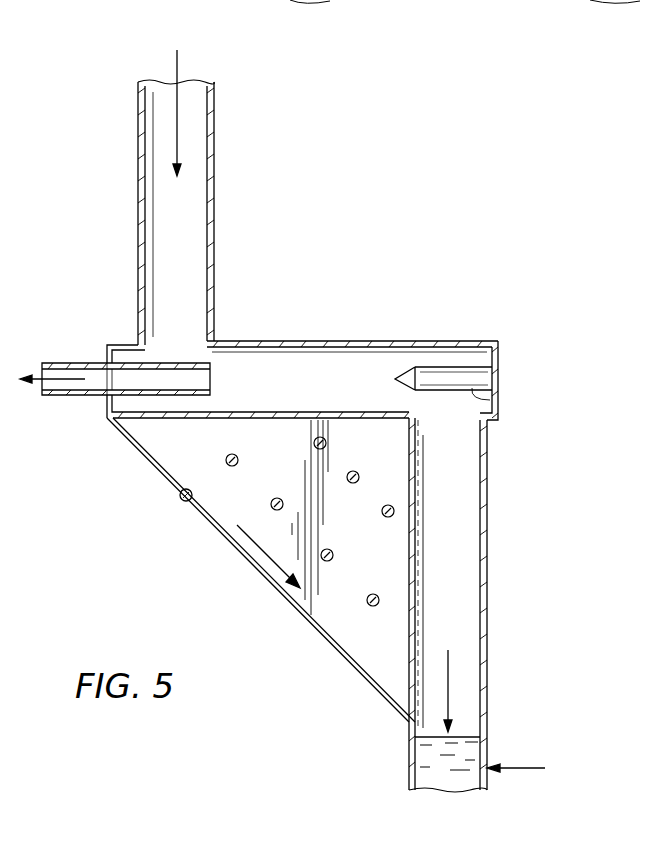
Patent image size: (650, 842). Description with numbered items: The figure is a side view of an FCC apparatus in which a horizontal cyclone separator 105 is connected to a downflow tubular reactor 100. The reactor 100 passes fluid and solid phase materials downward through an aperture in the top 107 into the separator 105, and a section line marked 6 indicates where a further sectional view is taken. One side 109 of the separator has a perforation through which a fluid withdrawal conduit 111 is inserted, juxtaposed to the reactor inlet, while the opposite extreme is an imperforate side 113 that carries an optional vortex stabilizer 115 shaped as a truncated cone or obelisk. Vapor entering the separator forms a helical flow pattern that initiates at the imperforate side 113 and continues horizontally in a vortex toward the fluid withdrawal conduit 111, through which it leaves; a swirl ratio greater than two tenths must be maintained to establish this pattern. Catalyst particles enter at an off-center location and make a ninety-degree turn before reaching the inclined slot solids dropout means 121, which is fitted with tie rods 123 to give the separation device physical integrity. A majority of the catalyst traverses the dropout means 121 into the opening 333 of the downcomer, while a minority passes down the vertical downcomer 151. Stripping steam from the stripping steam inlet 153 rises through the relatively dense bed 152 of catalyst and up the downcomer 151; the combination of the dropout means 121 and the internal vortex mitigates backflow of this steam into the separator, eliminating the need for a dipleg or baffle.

The section line for FIG. 6 is at (176, 27).
The downflow tubular reactor 100 is at (214, 177).
The horizontal cyclone separator 105 is at (348, 278).
The top 107 is at (400, 340).
The side 109 is at (103, 348).
The fluid withdrawal conduit 111 is at (135, 395).
The imperforate side 113 is at (498, 356).
The vortex stabilizer 115 is at (498, 402).
The inclined slot solids dropout means 121 is at (186, 497).
The tie rods 123 is at (277, 498).
The vertical downcomer 151 is at (489, 498).
The relatively dense bed 152 is at (412, 766).
The stripping steam inlet 153 is at (525, 768).
The opening of the downcomer 333 is at (415, 652).